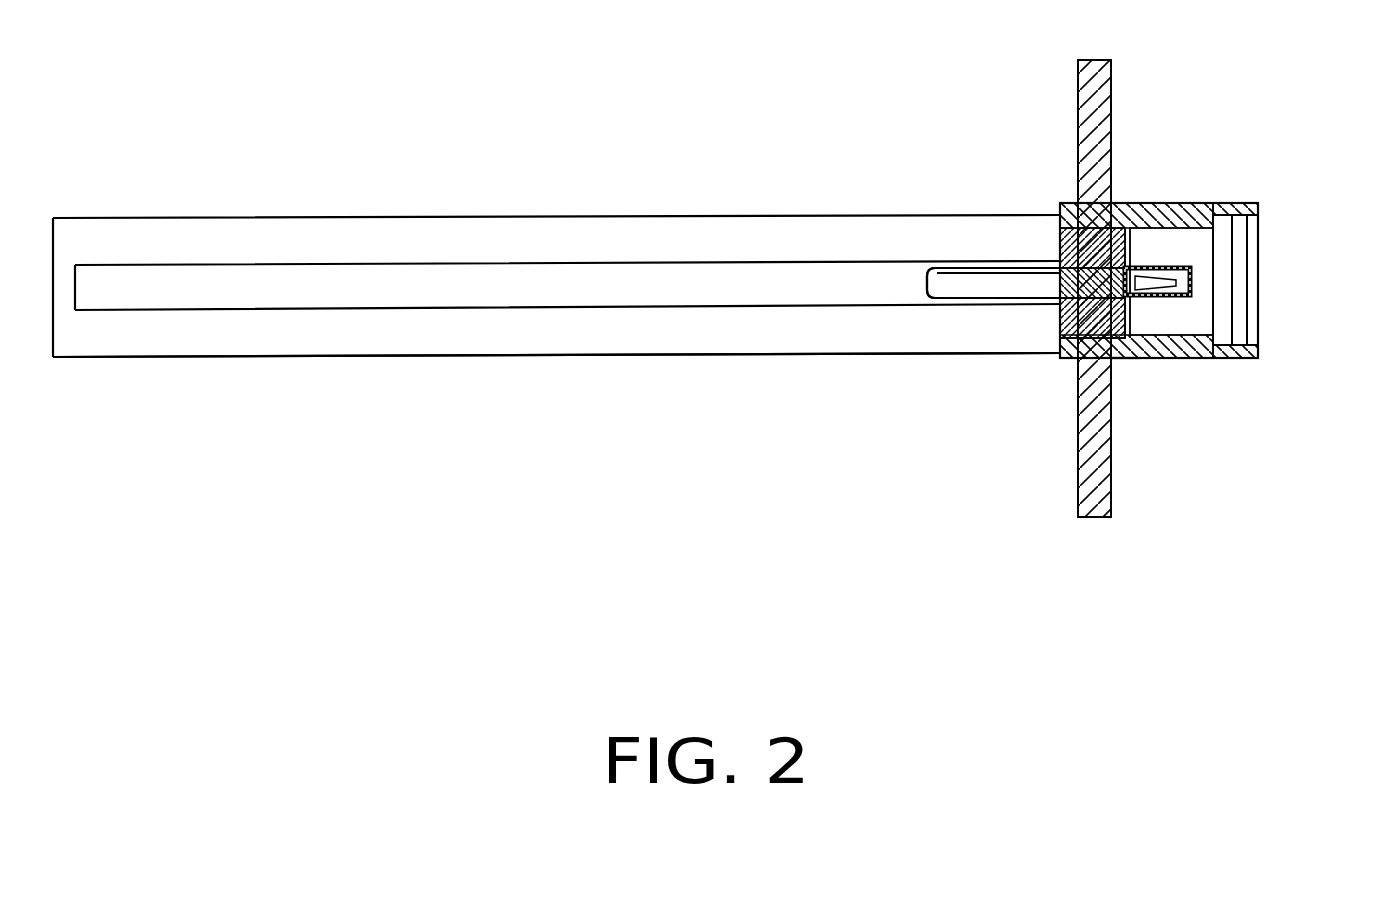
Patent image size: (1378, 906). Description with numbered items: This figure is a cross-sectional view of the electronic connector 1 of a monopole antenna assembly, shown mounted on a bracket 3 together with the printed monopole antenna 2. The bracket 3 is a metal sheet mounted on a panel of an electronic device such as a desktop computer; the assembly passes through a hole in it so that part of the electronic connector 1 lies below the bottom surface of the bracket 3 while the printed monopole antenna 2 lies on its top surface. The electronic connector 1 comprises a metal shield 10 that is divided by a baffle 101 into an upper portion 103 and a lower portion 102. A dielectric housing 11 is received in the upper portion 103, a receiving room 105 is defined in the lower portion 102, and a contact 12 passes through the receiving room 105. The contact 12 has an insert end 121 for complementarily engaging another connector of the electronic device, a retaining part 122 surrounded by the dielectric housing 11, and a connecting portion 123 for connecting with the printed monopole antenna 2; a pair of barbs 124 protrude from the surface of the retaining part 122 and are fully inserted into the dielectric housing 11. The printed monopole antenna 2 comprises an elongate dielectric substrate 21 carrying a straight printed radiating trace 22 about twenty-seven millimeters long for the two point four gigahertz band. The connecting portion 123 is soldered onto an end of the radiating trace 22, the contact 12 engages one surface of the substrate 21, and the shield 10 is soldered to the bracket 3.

The electronic connector 1 is at (1124, 257).
The metal shield 10 is at (1225, 205).
The baffle 101 is at (1123, 232).
The lower portion 102 is at (1202, 362).
The upper portion 103 is at (1075, 362).
The receiving room 105 is at (1197, 243).
The dielectric housing 11 is at (1068, 228).
The contact 12 is at (1017, 283).
The insert end 121 is at (1175, 286).
The retaining part 122 is at (1138, 358).
The connecting portion 123 is at (947, 283).
The barbs 124 is at (1062, 305).
The printed monopole antenna 2 is at (685, 240).
The dielectric substrate 21 is at (530, 335).
The radiating trace 22 is at (345, 290).
The bracket 3 is at (1112, 445).